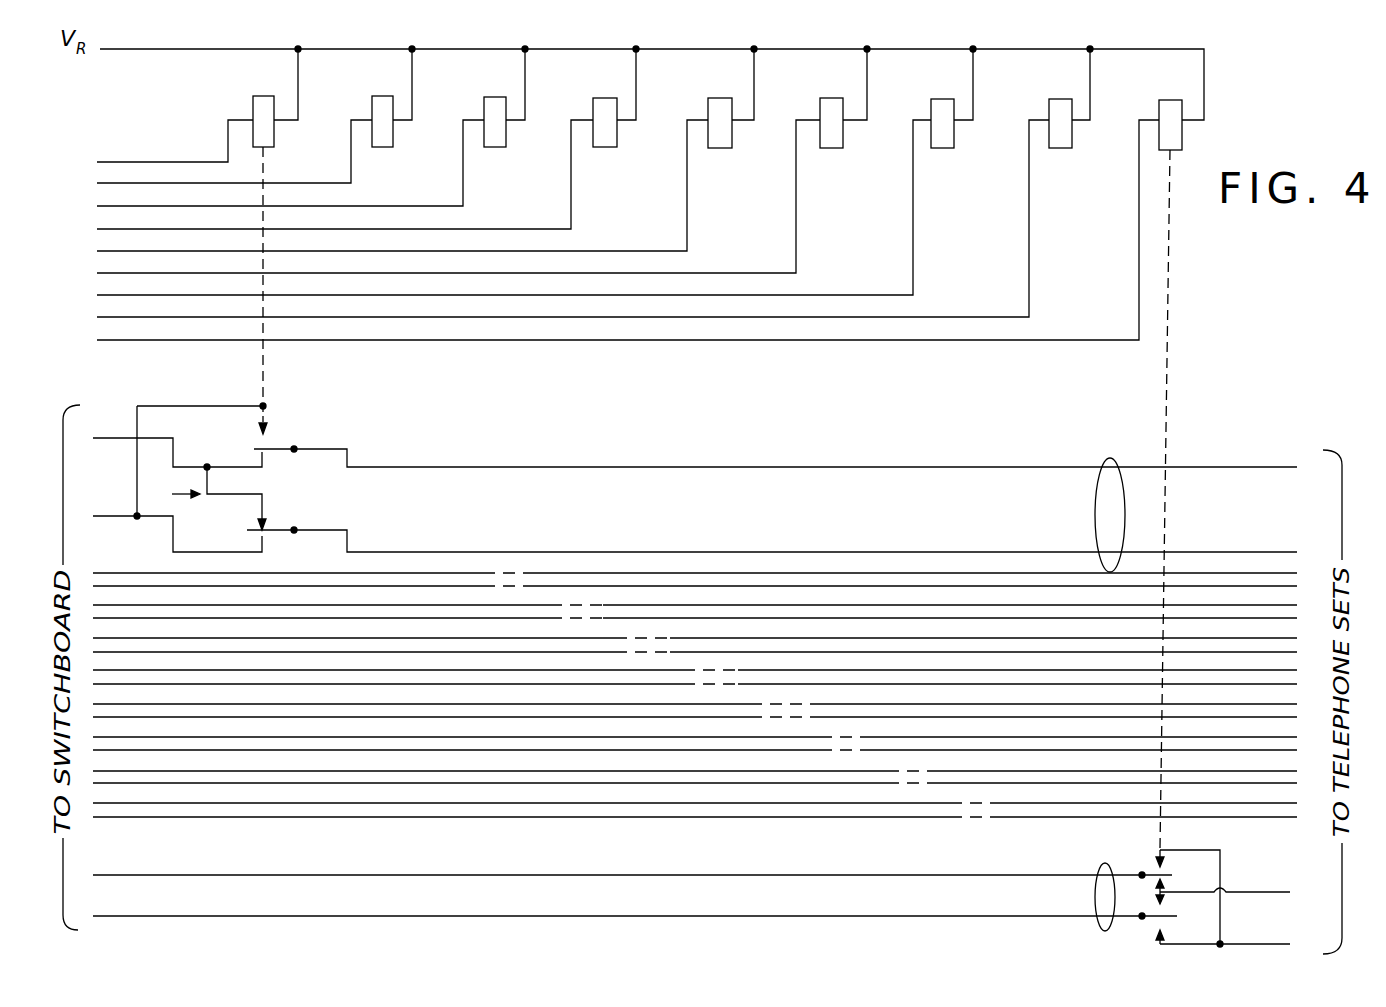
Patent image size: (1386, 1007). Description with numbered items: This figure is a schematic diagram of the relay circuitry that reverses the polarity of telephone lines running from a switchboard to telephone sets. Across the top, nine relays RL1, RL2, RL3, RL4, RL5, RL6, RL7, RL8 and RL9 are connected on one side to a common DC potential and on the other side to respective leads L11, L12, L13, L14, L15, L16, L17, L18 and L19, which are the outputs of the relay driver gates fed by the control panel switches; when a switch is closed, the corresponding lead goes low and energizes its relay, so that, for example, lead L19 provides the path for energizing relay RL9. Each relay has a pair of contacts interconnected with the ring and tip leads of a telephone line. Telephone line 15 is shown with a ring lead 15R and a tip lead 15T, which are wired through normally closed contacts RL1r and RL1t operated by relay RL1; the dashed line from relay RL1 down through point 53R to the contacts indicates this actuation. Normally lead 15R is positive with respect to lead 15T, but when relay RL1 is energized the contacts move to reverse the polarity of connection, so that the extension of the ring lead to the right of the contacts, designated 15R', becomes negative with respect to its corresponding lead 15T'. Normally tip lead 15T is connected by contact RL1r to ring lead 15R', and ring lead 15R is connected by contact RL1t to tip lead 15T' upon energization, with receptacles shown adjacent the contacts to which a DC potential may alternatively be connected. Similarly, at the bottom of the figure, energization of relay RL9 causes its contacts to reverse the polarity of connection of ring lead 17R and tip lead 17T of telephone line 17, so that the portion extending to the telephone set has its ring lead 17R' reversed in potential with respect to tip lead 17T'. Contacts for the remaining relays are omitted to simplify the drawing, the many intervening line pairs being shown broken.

The gate output lead L11 is at (134, 161).
The gate output lead L12 is at (142, 182).
The gate output lead L13 is at (125, 205).
The gate output lead L14 is at (134, 228).
The gate output lead L15 is at (127, 250).
The gate output lead L16 is at (134, 272).
The gate output lead L17 is at (127, 294).
The gate output lead L18 is at (134, 316).
The gate output lead L19 is at (122, 339).
The relay RL1 is at (253, 99).
The relay RL2 is at (372, 99).
The relay RL3 is at (484, 99).
The relay RL4 is at (593, 99).
The relay RL5 is at (708, 99).
The relay RL6 is at (840, 78).
The relay RL7 is at (952, 78).
The relay RL8 is at (1068, 78).
The relay RL9 is at (1159, 100).
The relay actuation point 53R is at (263, 406).
The ring lead 15R is at (179, 468).
The tip lead 15T is at (177, 529).
The relay contact RL1r is at (266, 447).
The relay contact RL1t is at (266, 530).
The telephone line 15 is at (1110, 458).
The ring lead extension 15R' is at (828, 436).
The tip lead extension 15T' is at (828, 526).
The telephone line 17 is at (1120, 835).
The ring lead 17R is at (632, 851).
The tip lead 17T is at (635, 899).
The ring lead 17R' is at (1223, 870).
The tip lead 17T' is at (1223, 925).